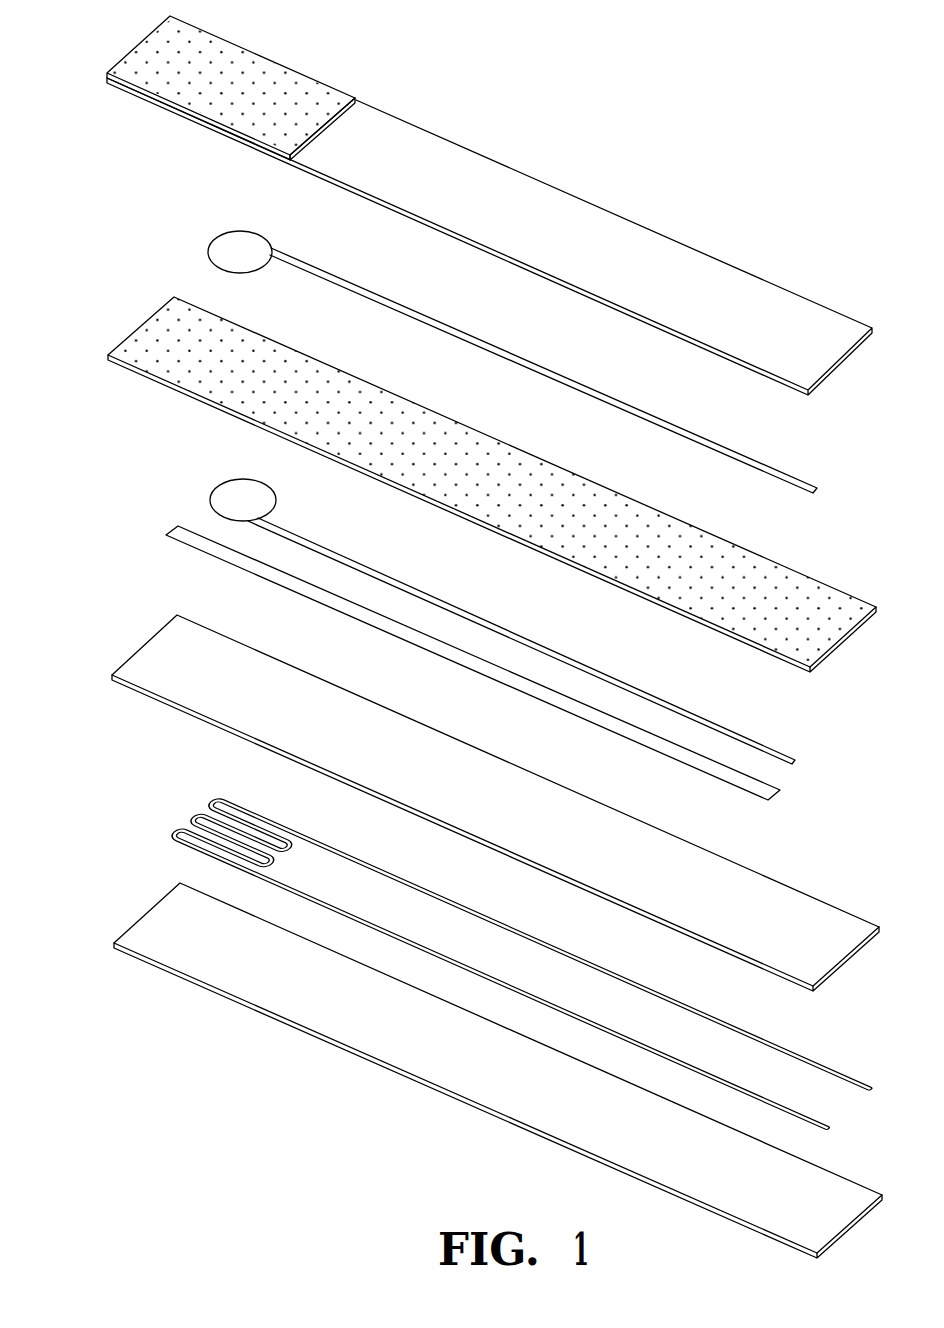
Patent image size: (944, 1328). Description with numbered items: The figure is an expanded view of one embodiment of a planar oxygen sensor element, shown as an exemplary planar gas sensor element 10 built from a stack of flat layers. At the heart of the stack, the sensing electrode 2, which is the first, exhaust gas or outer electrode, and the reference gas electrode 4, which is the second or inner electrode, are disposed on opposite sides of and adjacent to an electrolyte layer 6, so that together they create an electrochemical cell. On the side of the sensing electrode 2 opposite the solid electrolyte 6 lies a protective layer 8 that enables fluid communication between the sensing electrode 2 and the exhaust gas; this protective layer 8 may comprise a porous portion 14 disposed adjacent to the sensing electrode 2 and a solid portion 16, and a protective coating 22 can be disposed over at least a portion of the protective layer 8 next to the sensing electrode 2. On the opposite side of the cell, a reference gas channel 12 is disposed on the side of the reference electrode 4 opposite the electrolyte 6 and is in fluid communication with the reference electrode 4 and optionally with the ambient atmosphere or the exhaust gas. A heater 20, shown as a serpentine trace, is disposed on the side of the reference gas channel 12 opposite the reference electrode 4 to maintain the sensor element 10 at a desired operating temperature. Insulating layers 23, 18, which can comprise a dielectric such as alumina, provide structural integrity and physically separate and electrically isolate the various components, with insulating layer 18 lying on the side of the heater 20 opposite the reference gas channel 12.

The planar gas sensor element 10 is at (609, 80).
The solid portion 16 is at (570, 200).
The protective layer 8 is at (136, 47).
The protective coating 22 is at (233, 63).
The porous portion 14 is at (338, 90).
The sensing electrode 2 is at (211, 238).
The electrolyte layer 6 is at (160, 328).
The reference gas electrode 4 is at (223, 492).
The reference gas channel 12 is at (177, 528).
The insulating layer 23 is at (157, 638).
The heater 20 is at (197, 817).
The insulating layer 18 is at (147, 910).